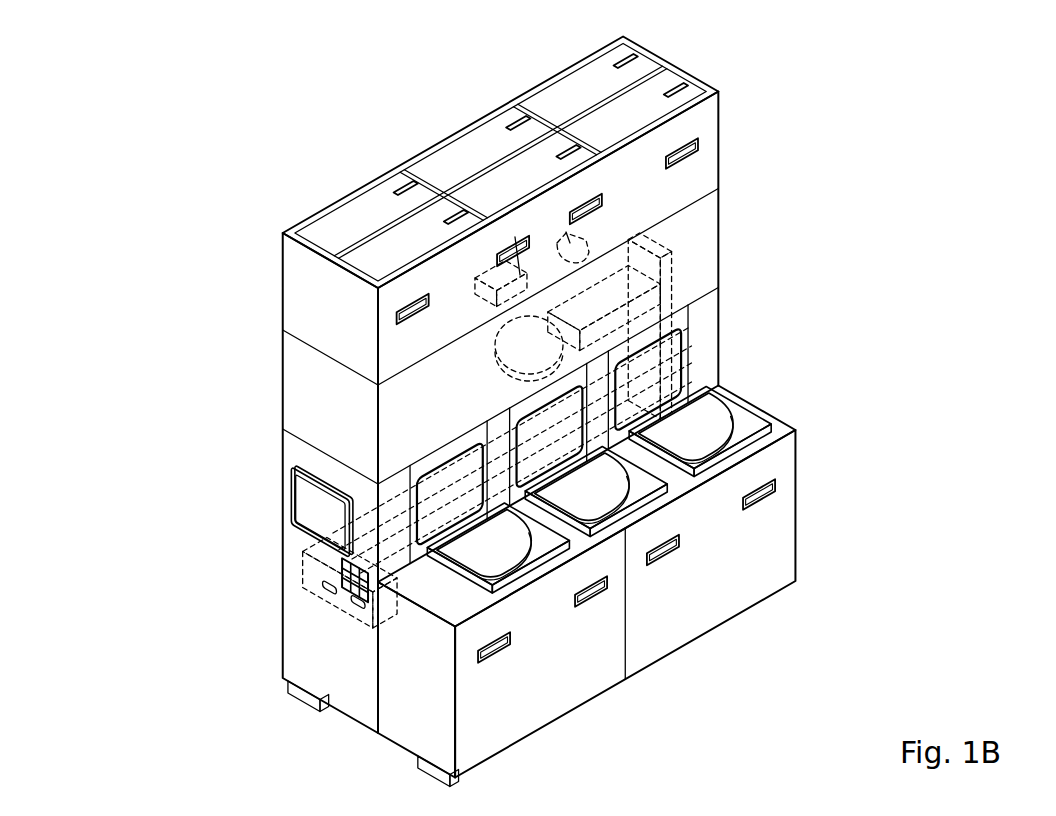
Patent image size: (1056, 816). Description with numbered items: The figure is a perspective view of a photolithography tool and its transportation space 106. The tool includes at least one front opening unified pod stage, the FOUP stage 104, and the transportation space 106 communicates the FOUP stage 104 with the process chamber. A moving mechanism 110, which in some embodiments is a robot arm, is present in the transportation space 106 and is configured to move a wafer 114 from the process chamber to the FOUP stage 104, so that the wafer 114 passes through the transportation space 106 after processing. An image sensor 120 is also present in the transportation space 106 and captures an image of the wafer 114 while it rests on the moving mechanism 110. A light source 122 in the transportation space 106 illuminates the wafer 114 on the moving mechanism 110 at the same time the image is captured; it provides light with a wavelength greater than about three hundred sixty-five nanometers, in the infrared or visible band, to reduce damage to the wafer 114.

The front opening unified pod (FOUP) stage 104 is at (736, 436).
The transportation space 106 is at (694, 231).
The moving mechanism 110 is at (668, 278).
The wafer 114 is at (530, 346).
The image sensor 120 is at (512, 242).
The light source 122 is at (566, 232).